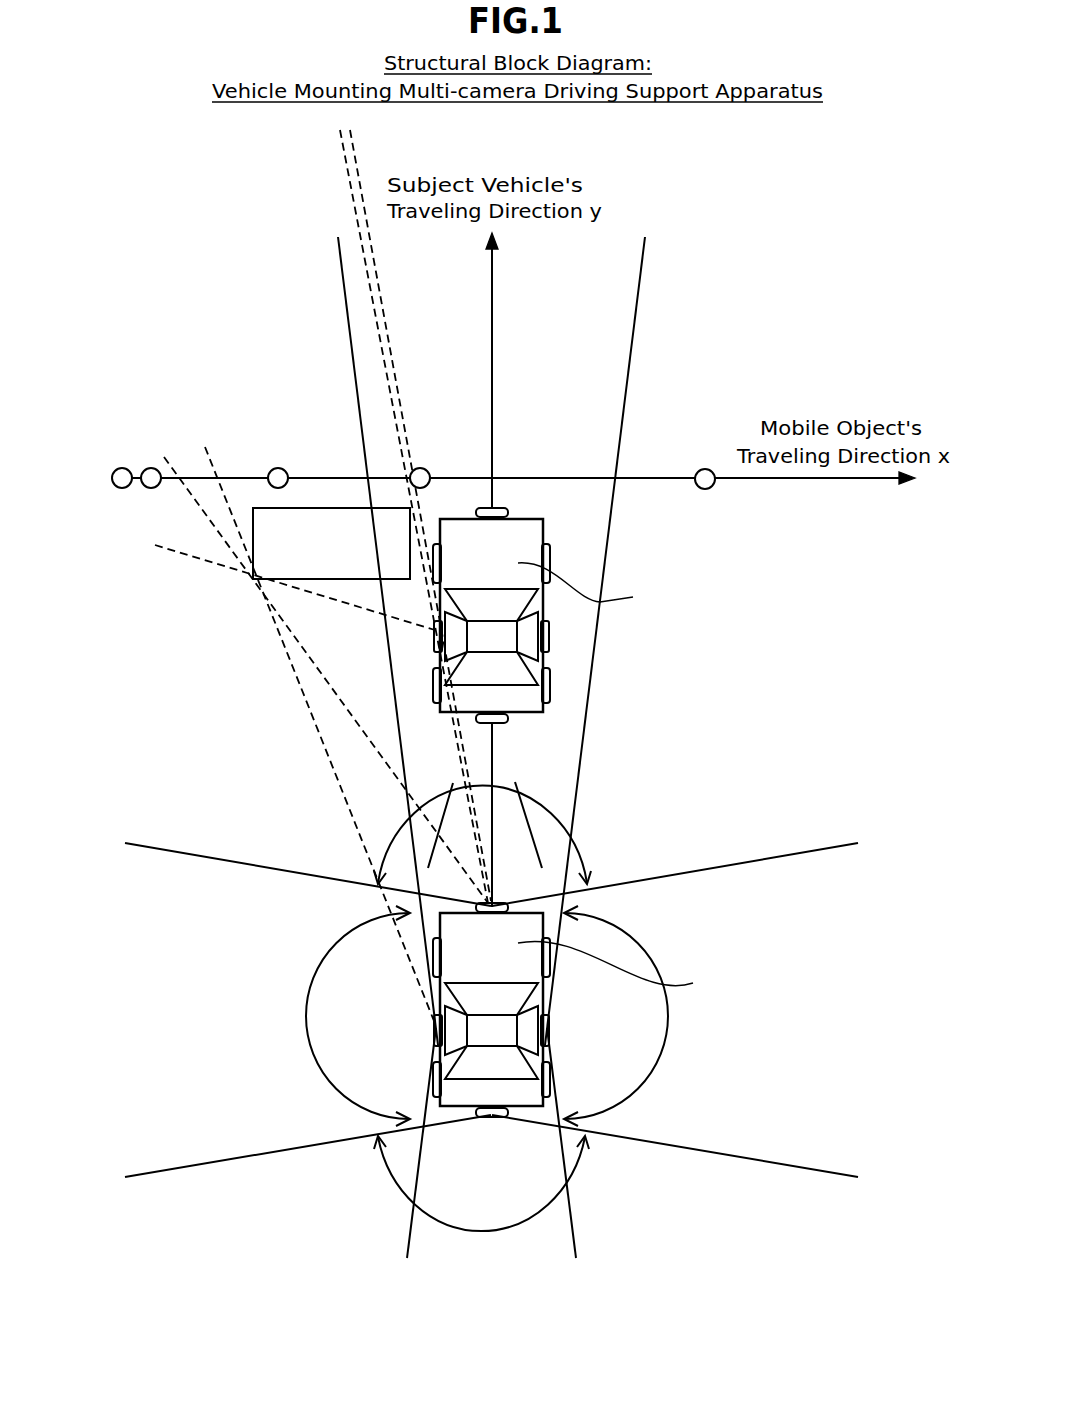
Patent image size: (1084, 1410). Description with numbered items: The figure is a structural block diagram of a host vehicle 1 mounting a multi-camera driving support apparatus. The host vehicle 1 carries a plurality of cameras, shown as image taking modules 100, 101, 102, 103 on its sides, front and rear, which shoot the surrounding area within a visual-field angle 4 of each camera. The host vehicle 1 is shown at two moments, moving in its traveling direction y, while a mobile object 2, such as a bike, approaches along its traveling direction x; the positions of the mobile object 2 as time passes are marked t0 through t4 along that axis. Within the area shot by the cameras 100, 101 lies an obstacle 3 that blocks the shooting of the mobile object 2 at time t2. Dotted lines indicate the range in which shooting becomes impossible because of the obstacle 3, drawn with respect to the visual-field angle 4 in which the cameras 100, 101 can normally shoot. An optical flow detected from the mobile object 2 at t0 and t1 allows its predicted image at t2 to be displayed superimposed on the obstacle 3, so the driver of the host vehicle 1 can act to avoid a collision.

The host vehicle 1 is at (513, 712).
The mobile object 2 is at (124, 468).
The obstacle 3 is at (252, 580).
The visual-field angle 4 is at (460, 783).
The image taking module 100 is at (432, 1022).
The image taking module 101 is at (493, 904).
The image taking module 102 is at (546, 1020).
The rear camera 103 is at (497, 1118).